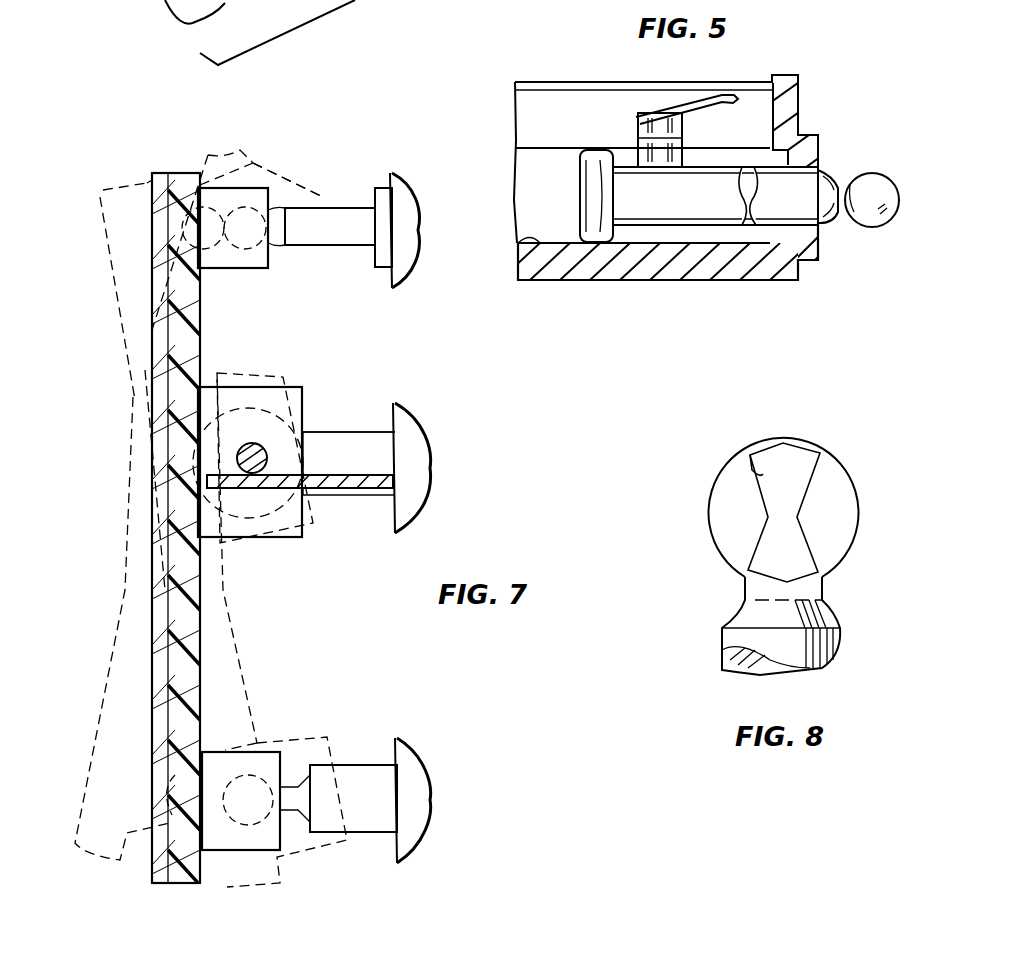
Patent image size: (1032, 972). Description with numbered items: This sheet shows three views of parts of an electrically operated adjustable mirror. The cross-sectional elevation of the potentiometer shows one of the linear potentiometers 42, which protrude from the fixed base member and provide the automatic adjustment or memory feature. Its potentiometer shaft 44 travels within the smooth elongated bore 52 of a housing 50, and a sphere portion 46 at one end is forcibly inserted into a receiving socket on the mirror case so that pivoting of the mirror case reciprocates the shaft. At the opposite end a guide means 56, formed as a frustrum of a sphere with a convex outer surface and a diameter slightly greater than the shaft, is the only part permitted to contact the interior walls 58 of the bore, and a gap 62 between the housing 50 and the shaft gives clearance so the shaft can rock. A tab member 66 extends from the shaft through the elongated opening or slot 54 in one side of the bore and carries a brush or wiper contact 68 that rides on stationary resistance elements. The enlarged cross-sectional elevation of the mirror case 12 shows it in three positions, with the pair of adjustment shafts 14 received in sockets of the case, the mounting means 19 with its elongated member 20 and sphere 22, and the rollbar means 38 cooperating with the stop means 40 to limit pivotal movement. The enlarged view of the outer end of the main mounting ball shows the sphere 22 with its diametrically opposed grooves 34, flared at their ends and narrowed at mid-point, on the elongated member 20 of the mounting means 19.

In FIG. 7, the mirror case 12 is at (210, 667).
In FIG. 7, the adjustment shafts 14 is at (343, 772).
In FIG. 7, the mounting means 19 is at (368, 425).
In FIG. 8, the mounting means 19 is at (852, 573).
In FIG. 7, the elongated member 20 is at (333, 442).
In FIG. 8, the elongated member 20 is at (840, 630).
In FIG. 8, the sphere 22 is at (833, 490).
In FIG. 8, the grooves 34 is at (760, 478).
In FIG. 7, the rollbar means 38 is at (249, 451).
In FIG. 7, the stop means 40 is at (350, 500).
In FIG. 5, the linear potentiometers 42 is at (868, 248).
In FIG. 7, the linear potentiometers 42 is at (335, 190).
In FIG. 5, the potentiometer shaft 44 is at (688, 208).
In FIG. 5, the sphere portion 46 is at (874, 181).
In FIG. 5, the housing 50 is at (548, 283).
In FIG. 5, the elongated bore 52 is at (530, 188).
In FIG. 5, the elongated opening or slot 54 is at (530, 133).
In FIG. 5, the guide means 56 is at (600, 152).
In FIG. 5, the interior walls 58 is at (515, 237).
In FIG. 5, the gap 62 is at (826, 231).
In FIG. 5, the tab member 66 is at (682, 142).
In FIG. 5, the brush or wiper contact 68 is at (705, 96).